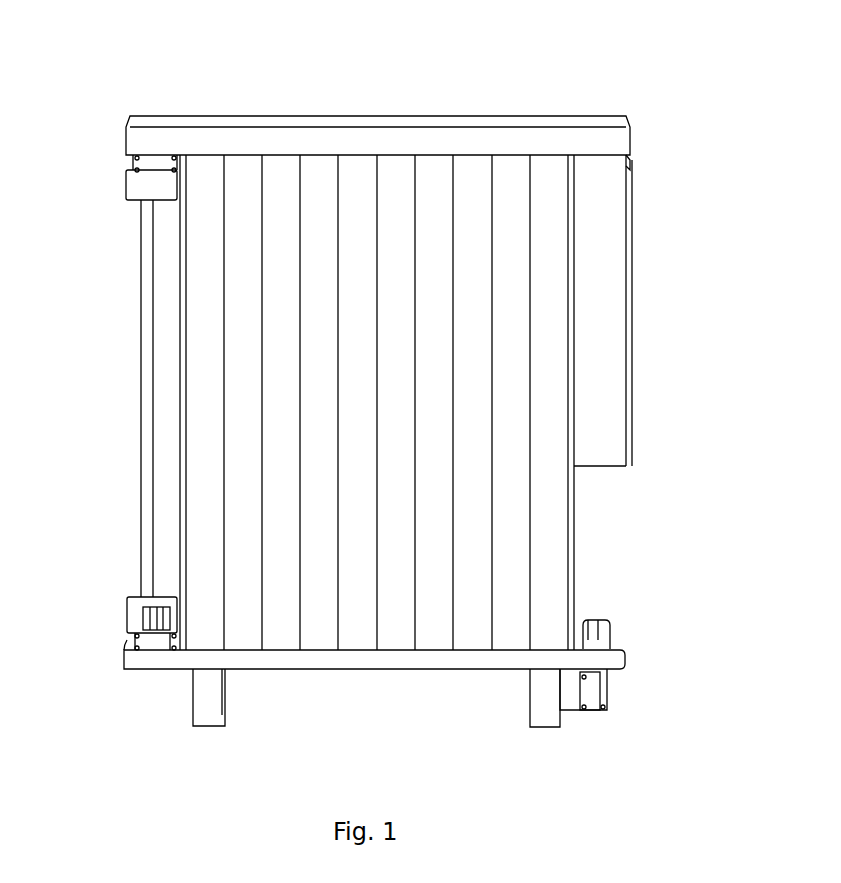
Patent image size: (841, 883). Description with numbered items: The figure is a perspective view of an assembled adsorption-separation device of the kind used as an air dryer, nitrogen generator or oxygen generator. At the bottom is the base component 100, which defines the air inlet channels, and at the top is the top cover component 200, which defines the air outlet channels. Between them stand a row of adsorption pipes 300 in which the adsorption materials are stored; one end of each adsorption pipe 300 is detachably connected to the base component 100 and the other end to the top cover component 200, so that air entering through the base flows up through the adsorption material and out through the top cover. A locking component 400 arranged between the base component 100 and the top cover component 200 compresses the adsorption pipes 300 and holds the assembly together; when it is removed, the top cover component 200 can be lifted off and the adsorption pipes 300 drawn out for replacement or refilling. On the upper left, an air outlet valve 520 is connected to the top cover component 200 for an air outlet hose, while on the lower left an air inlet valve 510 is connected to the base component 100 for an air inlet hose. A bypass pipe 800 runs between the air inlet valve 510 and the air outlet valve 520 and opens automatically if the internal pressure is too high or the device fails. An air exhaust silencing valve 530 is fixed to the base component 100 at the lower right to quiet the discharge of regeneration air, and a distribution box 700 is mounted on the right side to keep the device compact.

The base component 100 is at (355, 670).
The top cover component 200 is at (320, 116).
The adsorption pipes 300 is at (513, 363).
The locking component 400 is at (180, 443).
The air inlet valve 510 is at (132, 625).
The air outlet valve 520 is at (170, 193).
The air exhaust silencing valve 530 is at (605, 708).
The distribution box 700 is at (590, 420).
The bypass pipe 800 is at (141, 372).